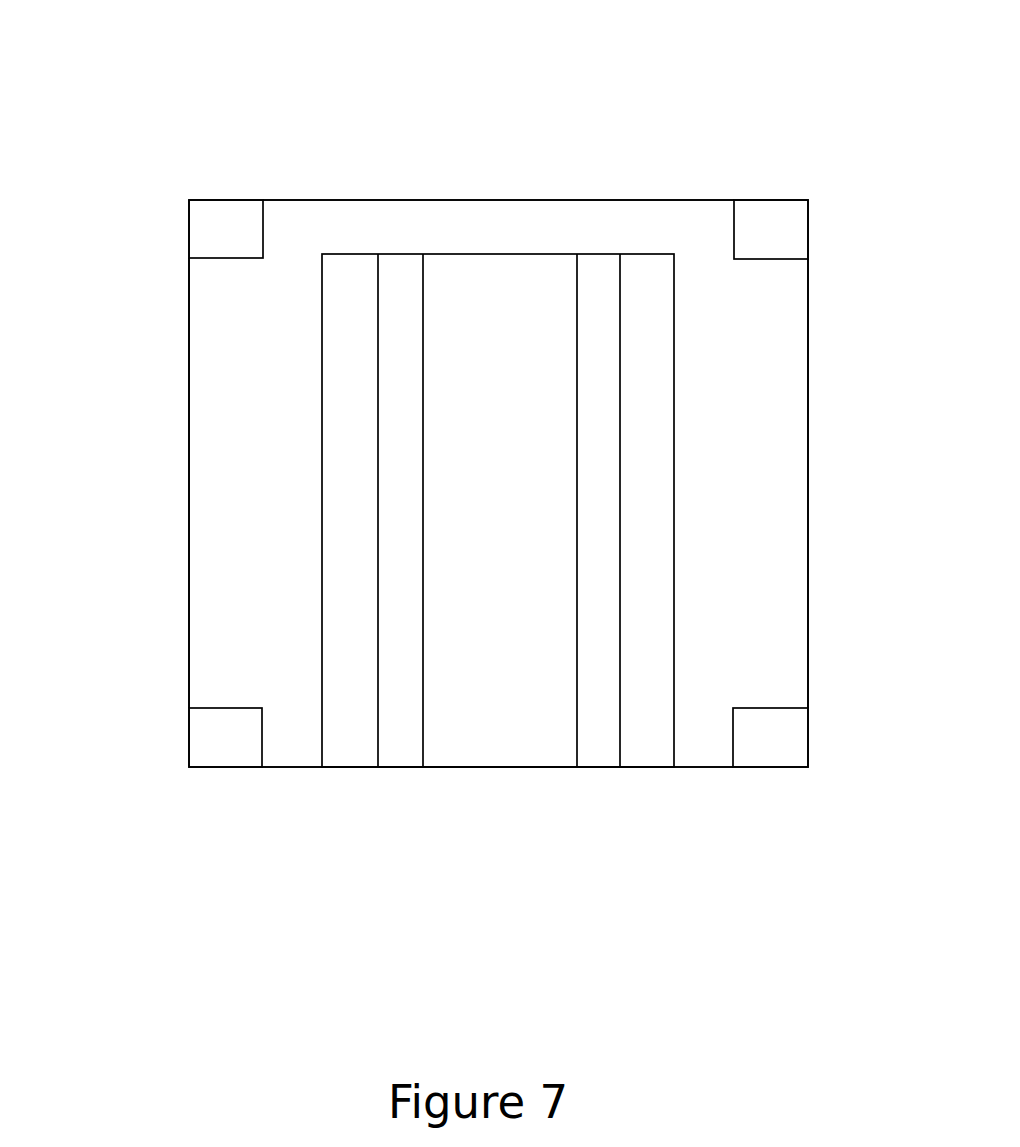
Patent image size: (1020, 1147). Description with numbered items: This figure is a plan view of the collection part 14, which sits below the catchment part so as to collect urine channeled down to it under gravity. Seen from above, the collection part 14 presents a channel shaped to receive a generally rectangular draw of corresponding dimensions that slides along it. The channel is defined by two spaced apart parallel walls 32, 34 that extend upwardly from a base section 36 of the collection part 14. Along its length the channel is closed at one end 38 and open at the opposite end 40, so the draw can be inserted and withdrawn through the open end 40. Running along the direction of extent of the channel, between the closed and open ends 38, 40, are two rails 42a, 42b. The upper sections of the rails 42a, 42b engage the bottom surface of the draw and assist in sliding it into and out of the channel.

The collection part 14 is at (808, 532).
The wall 32 is at (227, 518).
The wall 34 is at (733, 593).
The base section 36 is at (508, 682).
The closed end 38 is at (541, 254).
The open end 40 is at (479, 768).
The rail 42a is at (403, 332).
The rail 42b is at (600, 352).